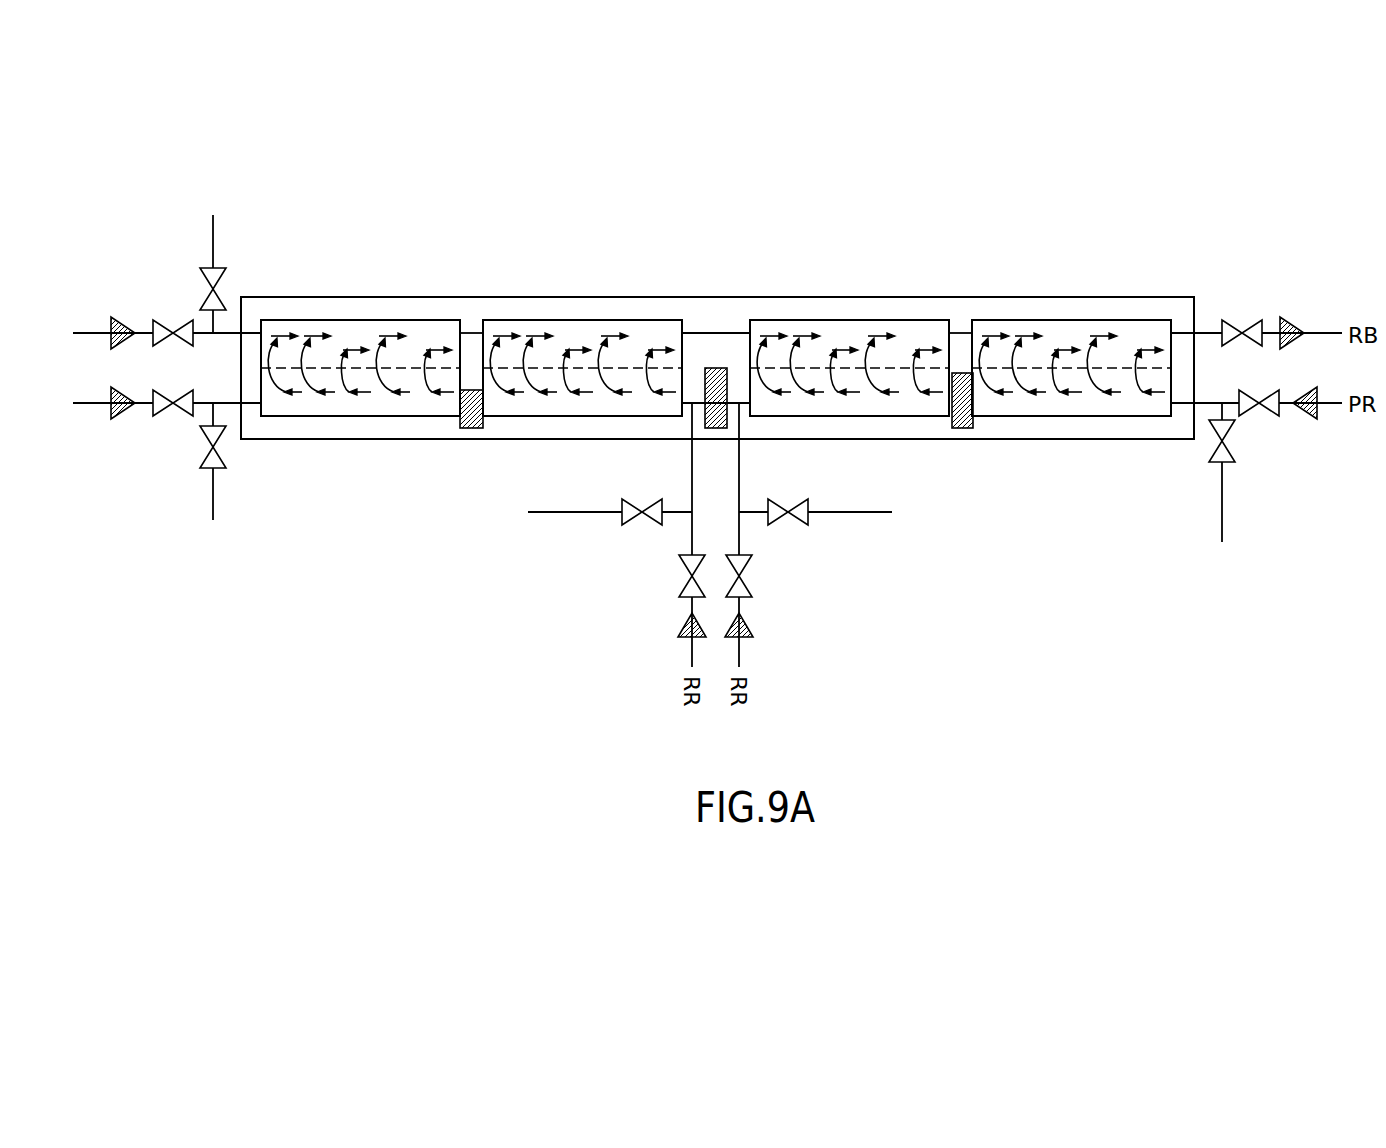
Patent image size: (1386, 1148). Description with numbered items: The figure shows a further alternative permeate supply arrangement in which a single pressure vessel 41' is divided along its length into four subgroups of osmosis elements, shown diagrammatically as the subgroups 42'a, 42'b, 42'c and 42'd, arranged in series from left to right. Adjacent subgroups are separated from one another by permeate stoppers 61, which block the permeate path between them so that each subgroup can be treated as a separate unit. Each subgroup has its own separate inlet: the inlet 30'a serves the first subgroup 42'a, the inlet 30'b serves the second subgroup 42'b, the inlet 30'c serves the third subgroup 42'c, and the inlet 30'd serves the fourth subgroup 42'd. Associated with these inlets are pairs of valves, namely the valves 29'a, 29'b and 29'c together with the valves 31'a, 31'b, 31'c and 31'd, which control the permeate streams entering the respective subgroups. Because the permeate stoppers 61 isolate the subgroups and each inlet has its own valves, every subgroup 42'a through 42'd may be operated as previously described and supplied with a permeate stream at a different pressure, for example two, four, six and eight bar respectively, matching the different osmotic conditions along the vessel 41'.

The pressure vessel 41' is at (717, 345).
The subgroup 42'a is at (360, 317).
The subgroup 42'b is at (582, 318).
The subgroup 42'c is at (849, 318).
The subgroup 42'd is at (1071, 318).
The permeate stopper 61 is at (703, 380).
The valve 29'a is at (709, 434).
The valve 29'b is at (635, 596).
The valve 29'c is at (796, 596).
The inlet 30'a is at (184, 478).
The inlet 30'b is at (628, 535).
The inlet 30'c is at (803, 535).
The inlet 30'd is at (1216, 434).
The valve 31'a is at (154, 411).
The valve 31'b is at (602, 528).
The valve 31'c is at (825, 528).
The valve 31'd is at (1167, 472).